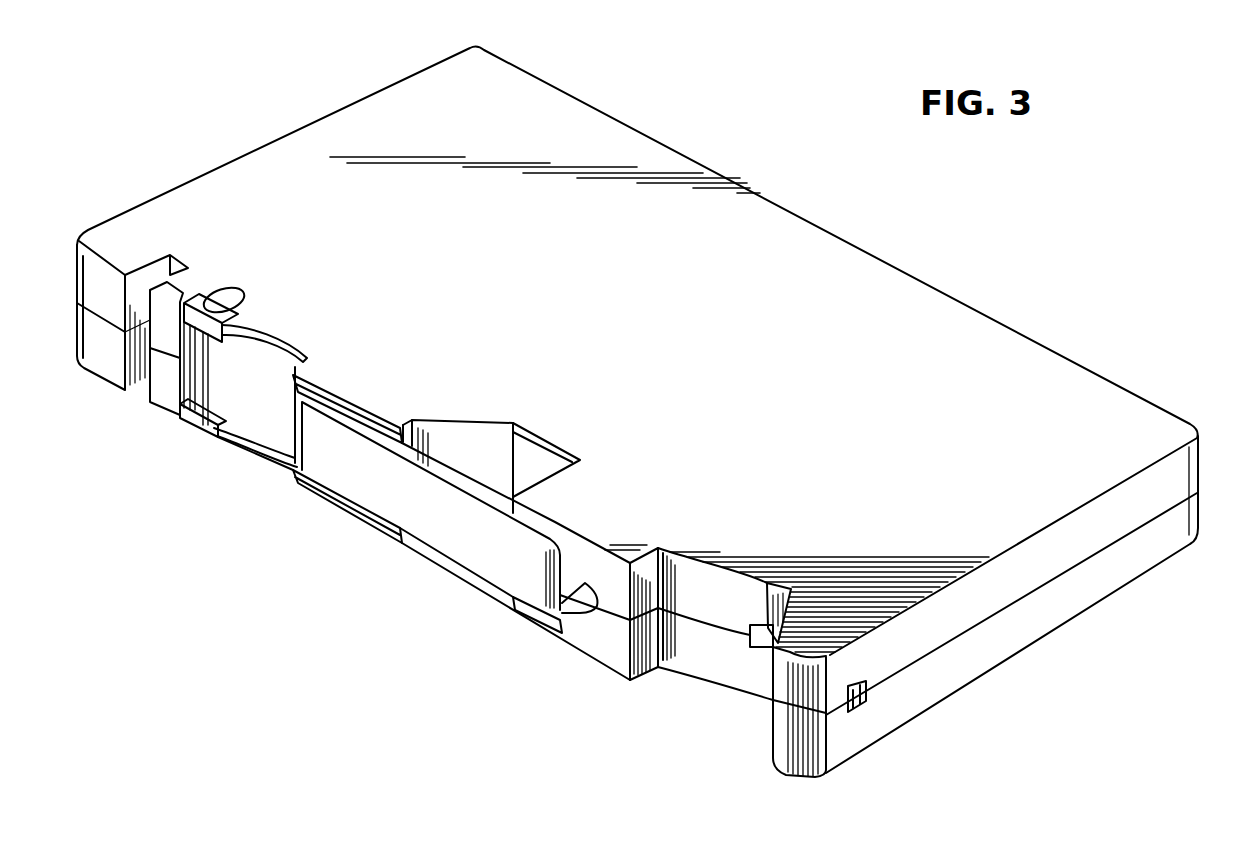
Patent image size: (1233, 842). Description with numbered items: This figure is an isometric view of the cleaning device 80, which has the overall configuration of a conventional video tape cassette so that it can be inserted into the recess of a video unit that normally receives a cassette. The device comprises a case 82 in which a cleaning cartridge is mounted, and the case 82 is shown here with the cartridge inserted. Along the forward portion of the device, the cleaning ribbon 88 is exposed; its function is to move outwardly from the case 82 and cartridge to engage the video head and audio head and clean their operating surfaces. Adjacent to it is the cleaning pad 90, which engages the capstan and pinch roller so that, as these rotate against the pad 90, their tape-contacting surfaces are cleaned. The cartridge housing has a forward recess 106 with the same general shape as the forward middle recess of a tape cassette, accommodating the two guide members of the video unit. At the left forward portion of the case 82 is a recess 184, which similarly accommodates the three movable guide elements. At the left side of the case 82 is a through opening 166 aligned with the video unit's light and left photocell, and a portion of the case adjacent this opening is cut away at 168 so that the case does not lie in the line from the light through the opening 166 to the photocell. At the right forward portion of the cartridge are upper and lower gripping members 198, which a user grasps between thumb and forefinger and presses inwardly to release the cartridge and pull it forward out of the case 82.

The cleaning device 80 is at (250, 102).
The case 82 is at (347, 108).
The cleaning ribbon 88 is at (457, 543).
The cleaning pad 90 is at (250, 367).
The forward recess 106 is at (463, 443).
The through opening 166 is at (873, 703).
The cut-away portion 168 is at (765, 628).
The recess 184 is at (717, 677).
The gripping members 198 is at (197, 303).